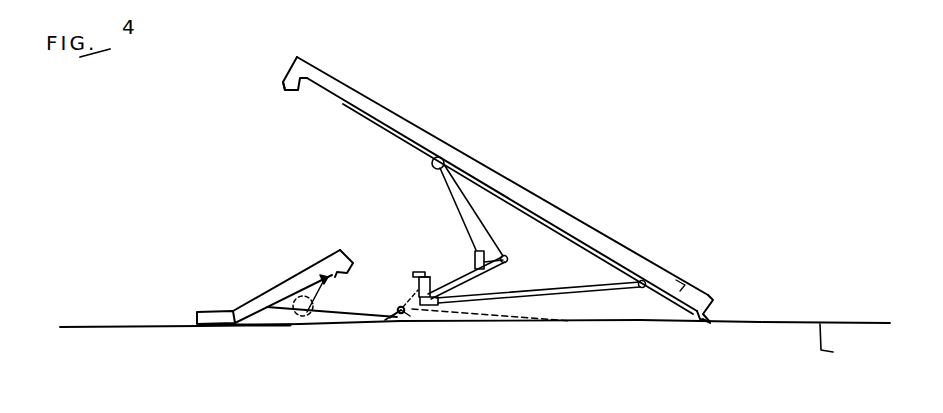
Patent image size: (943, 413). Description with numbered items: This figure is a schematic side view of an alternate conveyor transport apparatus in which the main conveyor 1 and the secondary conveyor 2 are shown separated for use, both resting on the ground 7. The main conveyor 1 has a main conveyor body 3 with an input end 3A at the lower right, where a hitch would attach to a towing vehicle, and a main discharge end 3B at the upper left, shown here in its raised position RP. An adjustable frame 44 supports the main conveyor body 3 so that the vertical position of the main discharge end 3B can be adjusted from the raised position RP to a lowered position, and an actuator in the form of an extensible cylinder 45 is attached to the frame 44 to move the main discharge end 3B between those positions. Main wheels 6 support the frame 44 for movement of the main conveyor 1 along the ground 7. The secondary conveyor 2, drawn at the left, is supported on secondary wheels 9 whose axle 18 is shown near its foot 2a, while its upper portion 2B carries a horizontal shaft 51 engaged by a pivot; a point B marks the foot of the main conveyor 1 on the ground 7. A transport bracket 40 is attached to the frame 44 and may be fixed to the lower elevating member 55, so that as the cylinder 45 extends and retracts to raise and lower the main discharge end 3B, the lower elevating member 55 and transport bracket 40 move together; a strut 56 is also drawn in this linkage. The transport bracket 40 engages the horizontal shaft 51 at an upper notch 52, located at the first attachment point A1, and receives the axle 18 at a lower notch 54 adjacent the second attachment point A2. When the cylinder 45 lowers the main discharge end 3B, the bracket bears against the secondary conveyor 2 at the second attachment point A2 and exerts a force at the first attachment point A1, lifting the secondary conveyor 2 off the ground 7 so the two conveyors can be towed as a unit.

The main conveyor 1 is at (462, 105).
The main conveyor body 3 is at (495, 168).
The input end 3A is at (708, 297).
The main discharge end 3B is at (303, 54).
The raised position RP is at (280, 60).
The base point B is at (710, 319).
The secondary conveyor 2 is at (282, 275).
The frame foot 2a is at (198, 312).
The frame bracket 2B is at (338, 247).
The horizontal shaft 51 is at (328, 280).
The axle 18 is at (317, 312).
The secondary wheels 9 is at (318, 322).
The transport bracket 40 is at (400, 307).
The lower notch 54 is at (397, 320).
The upper notch 52 is at (418, 276).
The first attachment point A1 is at (424, 278).
The lower elevating member 55 is at (478, 290).
The strut 56 is at (450, 180).
The extensible cylinder 45 is at (491, 251).
The adjustable frame 44 is at (490, 218).
The main wheels 6 is at (440, 312).
The second attachment point A2 is at (390, 318).
The ground 7 is at (475, 342).